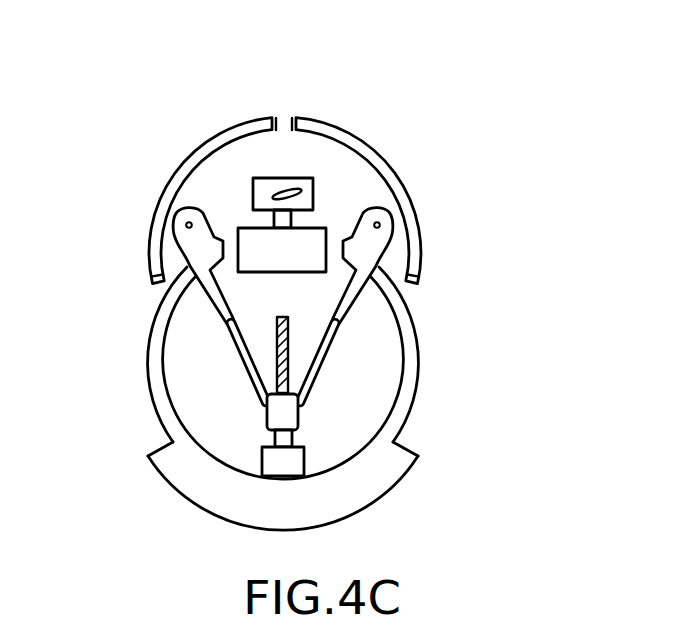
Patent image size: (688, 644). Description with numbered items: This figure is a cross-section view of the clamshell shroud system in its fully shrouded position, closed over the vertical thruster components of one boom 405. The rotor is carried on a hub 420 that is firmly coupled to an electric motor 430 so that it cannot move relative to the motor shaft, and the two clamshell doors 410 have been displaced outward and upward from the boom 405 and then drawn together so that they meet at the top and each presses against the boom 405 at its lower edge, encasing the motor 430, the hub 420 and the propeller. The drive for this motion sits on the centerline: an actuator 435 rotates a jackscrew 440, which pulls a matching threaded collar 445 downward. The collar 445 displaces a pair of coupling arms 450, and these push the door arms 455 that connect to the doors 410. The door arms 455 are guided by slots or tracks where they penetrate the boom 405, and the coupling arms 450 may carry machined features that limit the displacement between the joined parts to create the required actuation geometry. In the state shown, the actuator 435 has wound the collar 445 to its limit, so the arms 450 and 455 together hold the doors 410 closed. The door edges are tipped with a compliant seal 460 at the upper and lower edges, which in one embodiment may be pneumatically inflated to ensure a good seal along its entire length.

The boom 405 is at (397, 481).
The clamshell doors 410 is at (357, 145).
The hub 420 is at (250, 178).
The electric motor 430 is at (292, 220).
The actuator 435 is at (267, 467).
The jackscrew 440 is at (278, 356).
The threaded collar 445 is at (298, 427).
The coupling arms 450 is at (318, 371).
The door arms 455 is at (358, 316).
The compliant seal 460 is at (157, 288).